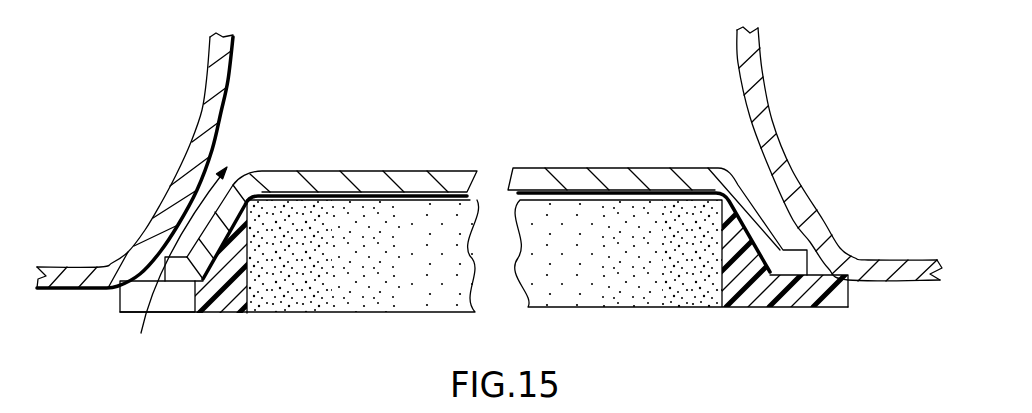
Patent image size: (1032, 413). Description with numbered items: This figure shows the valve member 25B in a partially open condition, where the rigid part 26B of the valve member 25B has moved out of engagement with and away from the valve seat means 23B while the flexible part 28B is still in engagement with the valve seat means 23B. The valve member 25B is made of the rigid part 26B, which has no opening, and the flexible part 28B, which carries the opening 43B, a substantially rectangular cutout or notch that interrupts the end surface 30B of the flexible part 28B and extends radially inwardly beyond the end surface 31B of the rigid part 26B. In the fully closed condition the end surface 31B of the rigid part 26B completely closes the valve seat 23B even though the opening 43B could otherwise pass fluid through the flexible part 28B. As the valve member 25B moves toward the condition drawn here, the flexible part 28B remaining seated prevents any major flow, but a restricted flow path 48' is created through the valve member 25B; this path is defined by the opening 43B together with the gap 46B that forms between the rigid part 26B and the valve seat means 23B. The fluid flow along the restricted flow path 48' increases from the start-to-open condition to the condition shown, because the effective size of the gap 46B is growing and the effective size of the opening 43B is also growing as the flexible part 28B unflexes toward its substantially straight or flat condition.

The valve seat means 23B is at (143, 267).
The restricted flow path 48' is at (135, 162).
The gap 46B is at (151, 247).
The end surface of the rigid part 31B is at (169, 266).
The end surface of the flexible part 30B is at (120, 297).
The opening in the flexible part 43B is at (182, 300).
The rigid part of the valve member 26B is at (353, 171).
The valve member 25B is at (608, 168).
The flexible part of the valve member 28B is at (753, 297).